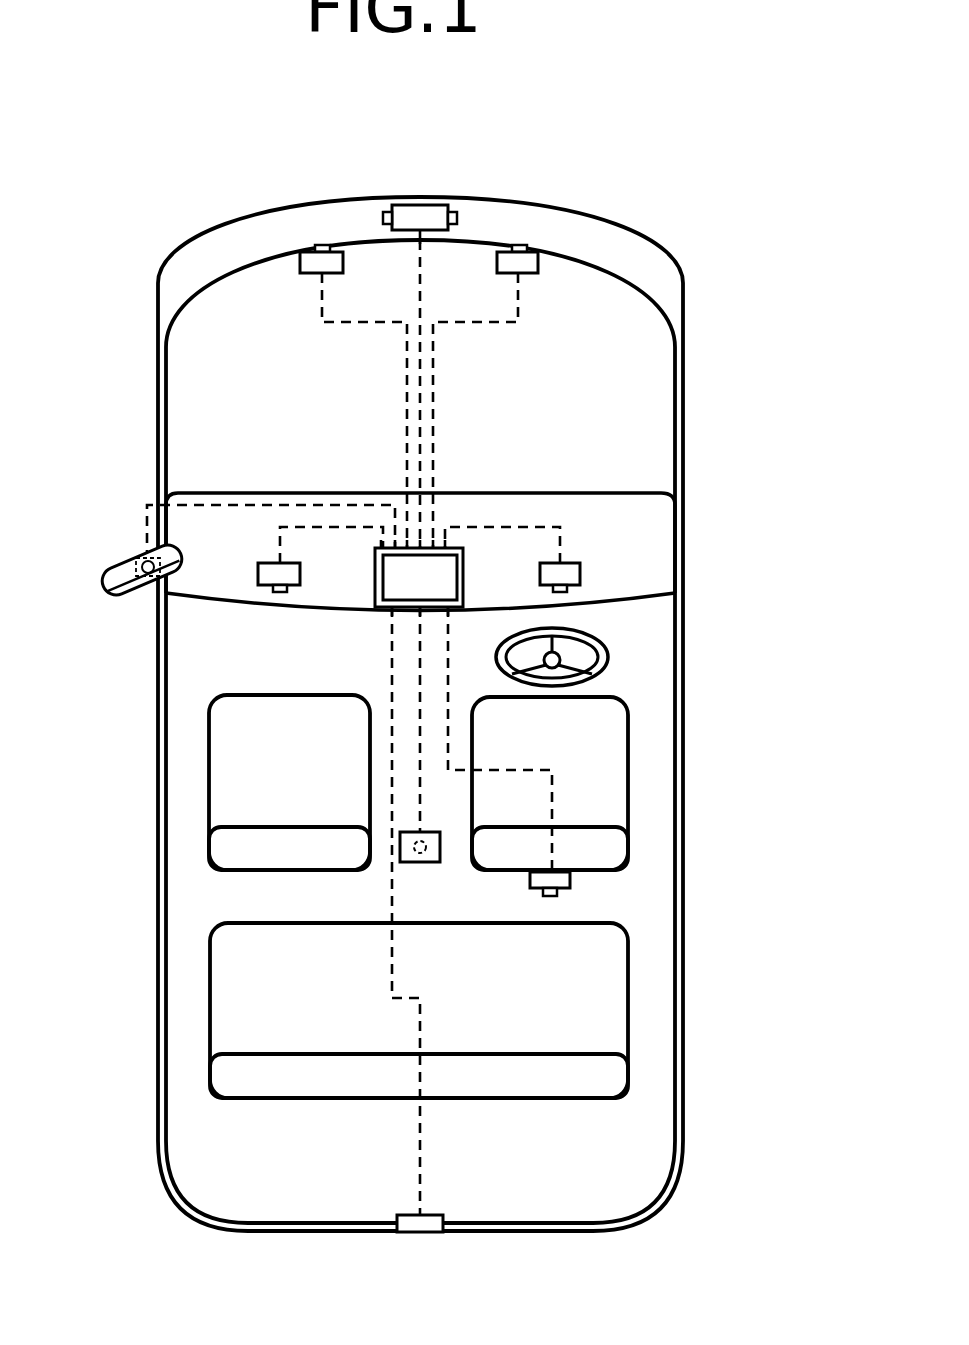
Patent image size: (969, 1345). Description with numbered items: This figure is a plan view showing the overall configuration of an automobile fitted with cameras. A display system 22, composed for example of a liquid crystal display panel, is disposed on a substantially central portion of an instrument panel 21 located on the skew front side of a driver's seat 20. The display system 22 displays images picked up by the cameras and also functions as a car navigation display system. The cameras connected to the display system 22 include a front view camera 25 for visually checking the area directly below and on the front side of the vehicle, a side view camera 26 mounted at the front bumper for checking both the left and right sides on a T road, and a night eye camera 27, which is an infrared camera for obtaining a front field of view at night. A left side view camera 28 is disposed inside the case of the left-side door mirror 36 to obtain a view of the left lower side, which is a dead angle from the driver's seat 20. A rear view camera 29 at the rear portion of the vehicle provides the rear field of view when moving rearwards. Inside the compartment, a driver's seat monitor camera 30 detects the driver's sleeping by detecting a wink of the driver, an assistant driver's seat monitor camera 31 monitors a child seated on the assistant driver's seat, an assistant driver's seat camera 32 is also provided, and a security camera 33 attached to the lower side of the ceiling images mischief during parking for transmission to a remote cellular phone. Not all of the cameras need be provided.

The driver's seat 20 is at (607, 781).
The instrument panel 21 is at (338, 594).
The display system 22 is at (448, 571).
The front view camera 25 is at (530, 262).
The side view camera 26 is at (425, 215).
The night eye camera 27 is at (305, 258).
The left side view camera 28 is at (125, 548).
The rear view camera 29 is at (425, 1232).
The driver's seat monitor camera 30 is at (573, 572).
The assistant driver's seat monitor camera 31 is at (270, 575).
The assistant driver's seat camera 32 is at (558, 881).
The security camera 33 is at (432, 852).
The left-side door mirror 36 is at (140, 600).